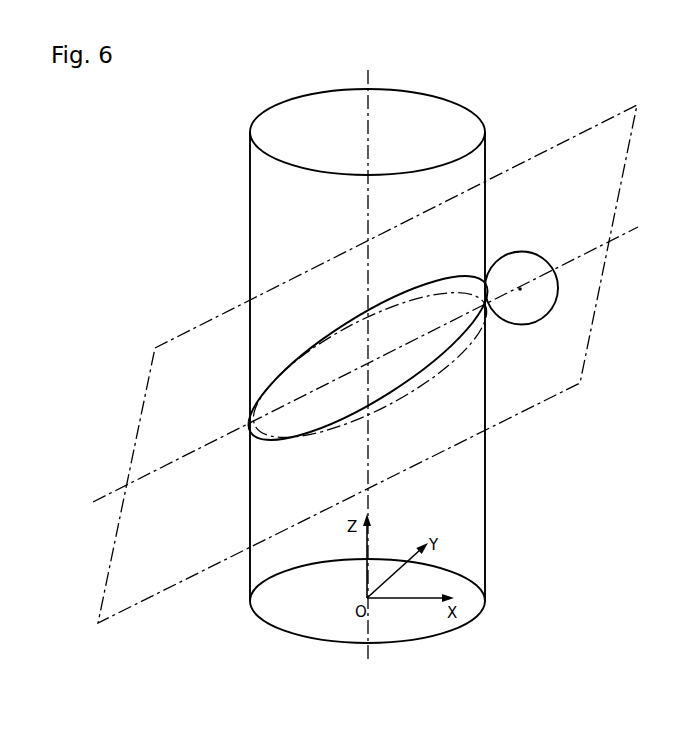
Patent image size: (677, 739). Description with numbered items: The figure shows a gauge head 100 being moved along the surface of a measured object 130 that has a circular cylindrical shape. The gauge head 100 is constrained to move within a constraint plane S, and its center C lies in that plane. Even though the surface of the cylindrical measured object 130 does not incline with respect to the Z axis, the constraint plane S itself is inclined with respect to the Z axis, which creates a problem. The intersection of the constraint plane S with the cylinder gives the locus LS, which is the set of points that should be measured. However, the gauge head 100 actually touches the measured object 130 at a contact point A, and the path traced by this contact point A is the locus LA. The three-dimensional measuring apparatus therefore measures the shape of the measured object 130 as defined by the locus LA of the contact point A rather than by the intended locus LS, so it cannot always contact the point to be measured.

The gauge head 100 is at (537, 266).
The measured object 130 is at (472, 515).
The constraint plane S is at (615, 178).
The locus of the point to be measured LS is at (440, 372).
The locus of the contact point LA is at (420, 288).
The gauge head center C is at (521, 291).
The contact point A is at (484, 288).